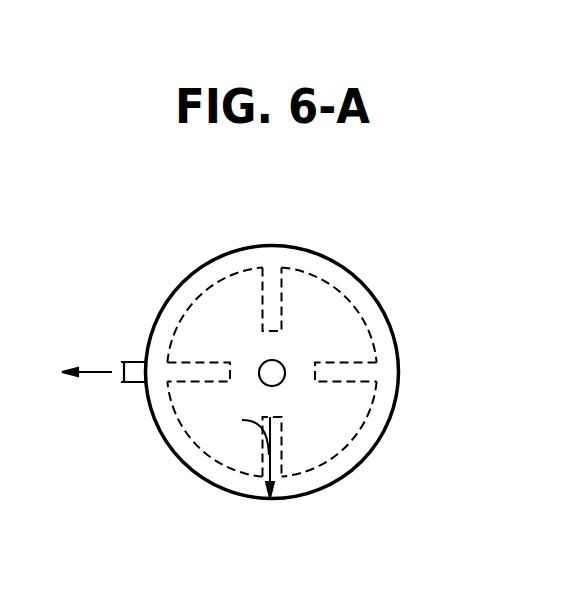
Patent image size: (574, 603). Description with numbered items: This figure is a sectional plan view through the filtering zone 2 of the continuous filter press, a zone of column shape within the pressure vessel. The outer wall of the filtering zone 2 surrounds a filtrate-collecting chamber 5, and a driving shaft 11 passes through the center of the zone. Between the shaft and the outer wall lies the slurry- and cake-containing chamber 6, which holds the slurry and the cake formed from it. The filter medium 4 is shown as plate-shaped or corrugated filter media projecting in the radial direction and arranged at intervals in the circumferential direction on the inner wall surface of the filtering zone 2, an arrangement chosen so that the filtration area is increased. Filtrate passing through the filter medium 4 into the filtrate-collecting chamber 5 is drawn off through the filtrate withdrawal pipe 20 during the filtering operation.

The filtering zone 2 is at (319, 249).
The filter medium 4 is at (349, 304).
The filtrate-collecting chamber 5 is at (398, 340).
The slurry- and cake-containing chamber 6 is at (230, 293).
The driving shaft 11 is at (258, 366).
The filtrate withdrawal pipe 20 is at (136, 385).